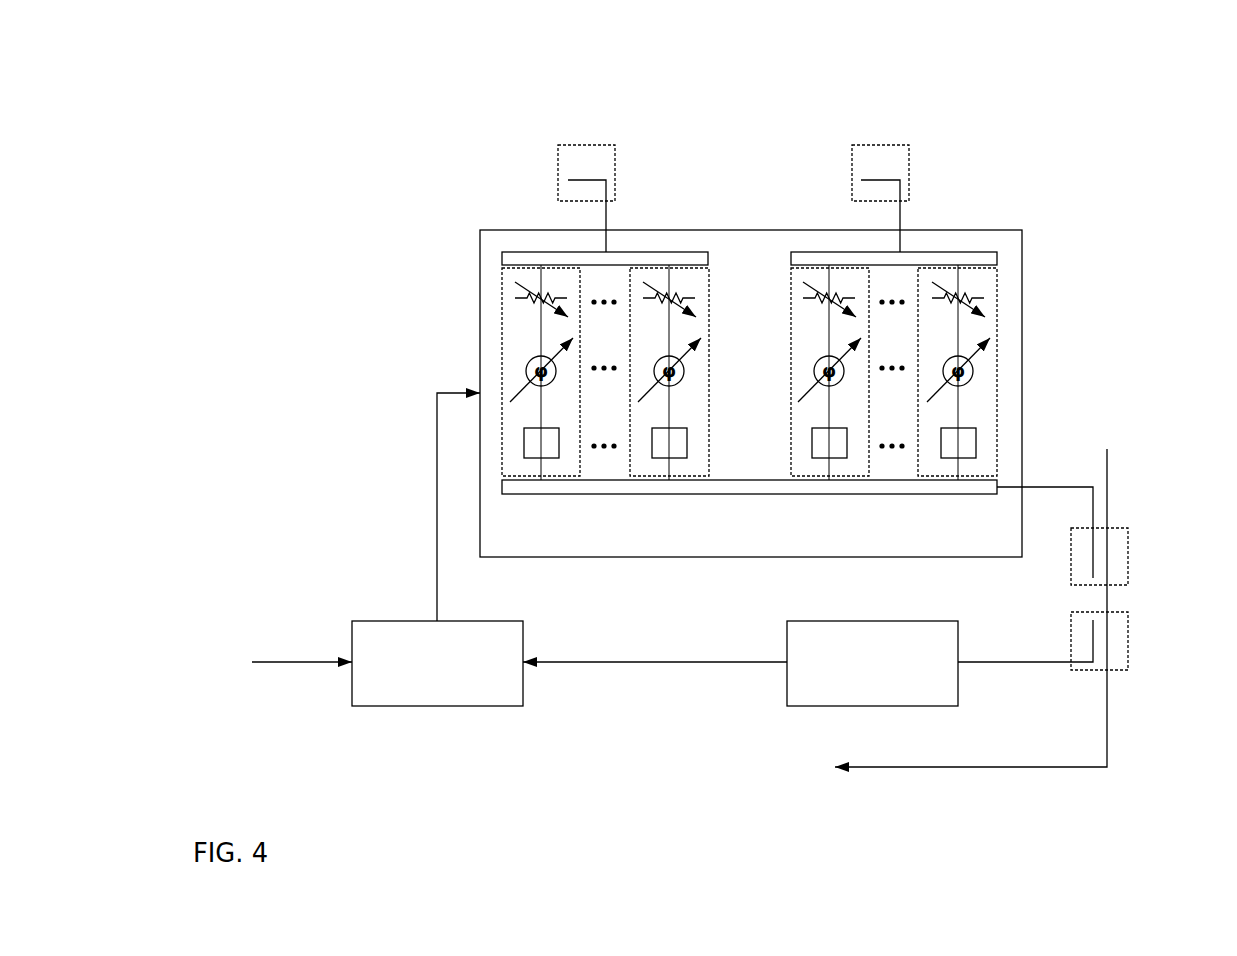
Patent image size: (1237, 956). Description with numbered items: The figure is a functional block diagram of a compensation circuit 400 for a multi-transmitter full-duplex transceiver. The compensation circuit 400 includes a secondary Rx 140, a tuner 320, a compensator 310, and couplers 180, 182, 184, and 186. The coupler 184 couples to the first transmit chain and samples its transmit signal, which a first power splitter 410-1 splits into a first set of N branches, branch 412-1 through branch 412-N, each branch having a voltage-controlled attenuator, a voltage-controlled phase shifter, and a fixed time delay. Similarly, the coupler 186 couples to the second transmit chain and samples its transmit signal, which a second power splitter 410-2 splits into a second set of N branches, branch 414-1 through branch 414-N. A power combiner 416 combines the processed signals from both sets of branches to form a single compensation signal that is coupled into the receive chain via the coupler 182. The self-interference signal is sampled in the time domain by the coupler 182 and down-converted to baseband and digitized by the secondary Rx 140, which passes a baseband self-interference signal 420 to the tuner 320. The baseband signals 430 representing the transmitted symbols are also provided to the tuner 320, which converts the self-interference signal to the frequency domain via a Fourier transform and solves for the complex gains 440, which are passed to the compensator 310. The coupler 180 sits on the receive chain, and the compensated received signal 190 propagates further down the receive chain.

The compensation circuit 400 is at (252, 97).
The coupler 184 is at (587, 137).
The coupler 186 is at (882, 137).
The first power splitter 410-1 is at (501, 262).
The second power splitter 410-2 is at (997, 258).
The branch 412-1 is at (501, 372).
The branch 412-N is at (709, 401).
The branch 414-1 is at (795, 374).
The branch 414-N is at (997, 372).
The power combiner 416 is at (905, 497).
The compensator 310 is at (767, 553).
The tuner 320 is at (453, 683).
The secondary Rx 140 is at (888, 683).
The complex gains 440 is at (437, 537).
The baseband signals 430 is at (280, 662).
The baseband self-interference signal 420 is at (643, 662).
The coupler 182 is at (1137, 555).
The coupler 180 is at (1137, 641).
The compensated received signal 190 is at (847, 765).